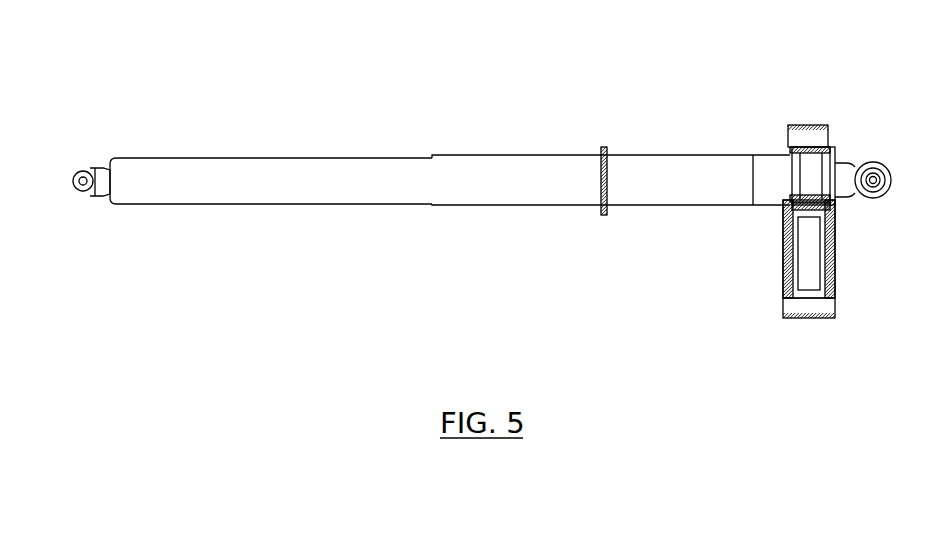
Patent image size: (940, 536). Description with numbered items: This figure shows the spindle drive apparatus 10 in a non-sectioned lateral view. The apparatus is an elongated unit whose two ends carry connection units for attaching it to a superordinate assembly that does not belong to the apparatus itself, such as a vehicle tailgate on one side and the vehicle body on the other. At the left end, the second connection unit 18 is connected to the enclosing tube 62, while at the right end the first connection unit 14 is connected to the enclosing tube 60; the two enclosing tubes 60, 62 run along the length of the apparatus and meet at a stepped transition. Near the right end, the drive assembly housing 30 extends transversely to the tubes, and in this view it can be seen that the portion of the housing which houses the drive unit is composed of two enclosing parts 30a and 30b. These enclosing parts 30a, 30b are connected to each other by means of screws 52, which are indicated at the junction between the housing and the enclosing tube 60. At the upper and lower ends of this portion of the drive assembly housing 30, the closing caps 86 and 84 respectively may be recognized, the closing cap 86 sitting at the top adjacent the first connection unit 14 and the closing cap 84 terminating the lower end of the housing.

The spindle drive apparatus 10 is at (688, 102).
The first connection unit 14 is at (878, 174).
The second connection unit 18 is at (90, 165).
The drive assembly housing 30 is at (836, 292).
The enclosing part 30a is at (827, 258).
The enclosing part 30b is at (790, 255).
The screws 52 is at (792, 196).
The enclosing tube 60 is at (527, 172).
The enclosing tube 62 is at (198, 163).
The closing cap 84 is at (822, 307).
The closing cap 86 is at (822, 137).